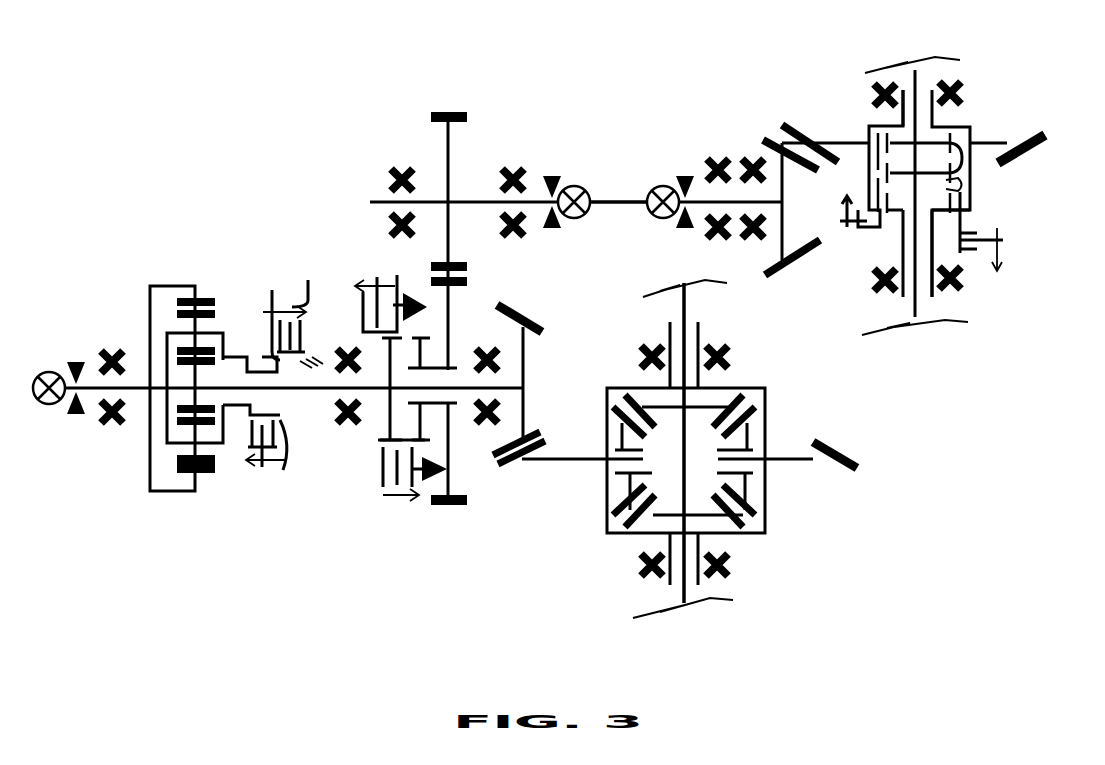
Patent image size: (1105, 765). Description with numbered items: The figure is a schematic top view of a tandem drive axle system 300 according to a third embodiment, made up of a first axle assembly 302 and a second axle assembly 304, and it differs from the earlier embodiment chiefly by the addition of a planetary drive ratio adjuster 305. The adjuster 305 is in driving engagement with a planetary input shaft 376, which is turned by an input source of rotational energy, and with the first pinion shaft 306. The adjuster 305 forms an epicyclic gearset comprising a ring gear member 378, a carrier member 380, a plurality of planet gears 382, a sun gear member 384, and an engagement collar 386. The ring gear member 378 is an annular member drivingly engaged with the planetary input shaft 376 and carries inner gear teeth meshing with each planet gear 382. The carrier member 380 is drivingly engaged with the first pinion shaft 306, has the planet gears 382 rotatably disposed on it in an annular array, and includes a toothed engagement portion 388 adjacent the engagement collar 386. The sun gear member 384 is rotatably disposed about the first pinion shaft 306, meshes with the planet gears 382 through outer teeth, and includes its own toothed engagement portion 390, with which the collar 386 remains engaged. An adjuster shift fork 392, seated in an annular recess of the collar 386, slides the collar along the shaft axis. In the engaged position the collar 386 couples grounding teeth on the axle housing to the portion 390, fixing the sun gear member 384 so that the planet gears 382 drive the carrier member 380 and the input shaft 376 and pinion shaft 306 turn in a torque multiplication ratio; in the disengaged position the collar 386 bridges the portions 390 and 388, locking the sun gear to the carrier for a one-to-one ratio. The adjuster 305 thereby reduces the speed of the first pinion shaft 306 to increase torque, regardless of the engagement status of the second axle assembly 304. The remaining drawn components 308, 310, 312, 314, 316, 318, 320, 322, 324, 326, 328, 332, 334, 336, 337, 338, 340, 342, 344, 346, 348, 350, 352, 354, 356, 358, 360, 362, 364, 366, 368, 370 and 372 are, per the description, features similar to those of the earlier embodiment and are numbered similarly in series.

The tandem drive axle system 300 is at (148, 72).
The first axle assembly 302 is at (404, 585).
The second axle assembly 304 is at (787, 35).
The planetary drive ratio adjuster 305 is at (152, 242).
The first pinion shaft 306 is at (337, 387).
The gear 308 is at (358, 358).
The output shaft 310 is at (524, 357).
The axle shaft 312 is at (812, 460).
The differential housing 314 is at (767, 518).
The side gear 316 is at (720, 447).
The bevel gear 318 is at (652, 406).
The hollow shaft 320 is at (694, 332).
The axle shaft 322 is at (688, 312).
The connecting shaft 324 is at (608, 200).
The countershaft 326 is at (449, 328).
The synchronizer 328 is at (380, 473).
The gear 332 is at (387, 420).
The output shaft 334 is at (524, 393).
The gear 336 is at (449, 148).
The universal joint 337 is at (583, 214).
The shaft 338 is at (785, 247).
The gear 340 is at (425, 360).
The gear 342 is at (463, 506).
The synchronizer 344 is at (420, 292).
The actuator 346 is at (433, 483).
The synchronizer 348 is at (383, 492).
The output shaft 350 is at (1007, 142).
The clutch housing 352 is at (985, 199).
The clutch actuator 354 is at (962, 222).
The gear 356 is at (932, 116).
The shaft 358 is at (935, 72).
The clutch 360 is at (903, 240).
The clutch housing 362 is at (972, 210).
The clutch pack 364 is at (926, 173).
The clutch 366 is at (960, 285).
The clutch 368 is at (870, 140).
The actuator 370 is at (1003, 243).
The clutch plate 372 is at (941, 192).
The planetary input shaft 376 is at (136, 392).
The ring gear member 378 is at (170, 495).
The carrier member 380 is at (220, 445).
The planet gears 382 is at (197, 322).
The sun gear member 384 is at (302, 412).
The engagement collar 386 is at (273, 440).
The toothed engagement portion 388 is at (248, 358).
The toothed engagement portion 390 is at (284, 312).
The adjuster shift fork 392 is at (315, 283).